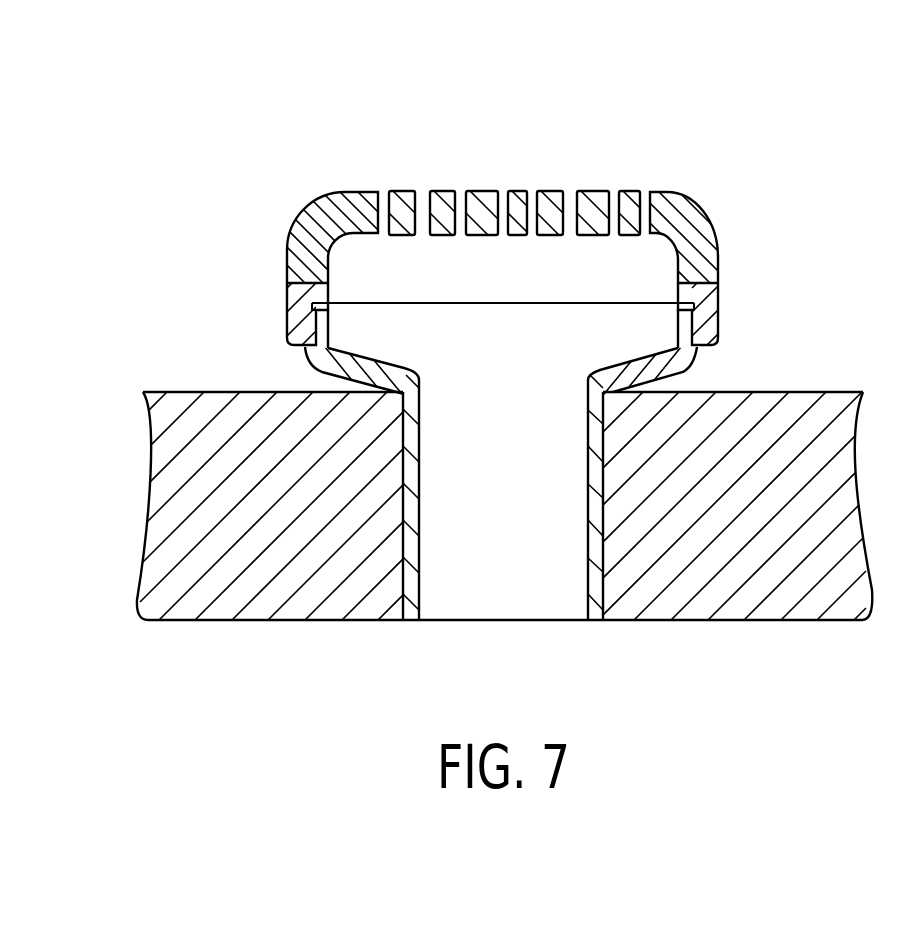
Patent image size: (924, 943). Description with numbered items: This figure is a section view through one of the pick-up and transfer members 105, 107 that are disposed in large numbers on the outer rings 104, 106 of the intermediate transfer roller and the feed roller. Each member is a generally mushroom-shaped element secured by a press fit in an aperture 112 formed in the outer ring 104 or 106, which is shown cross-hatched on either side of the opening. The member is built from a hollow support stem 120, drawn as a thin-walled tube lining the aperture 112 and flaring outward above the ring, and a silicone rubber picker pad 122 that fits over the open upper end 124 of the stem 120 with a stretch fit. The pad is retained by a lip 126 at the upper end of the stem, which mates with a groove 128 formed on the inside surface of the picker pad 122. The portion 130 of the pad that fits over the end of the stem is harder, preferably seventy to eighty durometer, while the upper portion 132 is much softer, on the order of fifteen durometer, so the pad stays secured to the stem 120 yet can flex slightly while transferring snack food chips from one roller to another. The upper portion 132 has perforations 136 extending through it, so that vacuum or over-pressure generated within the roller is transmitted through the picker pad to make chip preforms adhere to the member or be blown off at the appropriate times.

The pick-up and transfer member 105 is at (506, 219).
The pick-up and transfer member 107 is at (506, 219).
The perforations 136 is at (464, 176).
The silicone rubber picker pad 122 is at (600, 198).
The upper portion 132 is at (692, 233).
The groove 128 is at (703, 308).
The portion 130 is at (713, 330).
The lip 126 is at (308, 307).
The open upper end 124 is at (467, 303).
The hollow support stem 120 is at (407, 613).
The aperture 112 is at (603, 610).
The outer ring 104 is at (504, 563).
The outer ring 106 is at (735, 610).